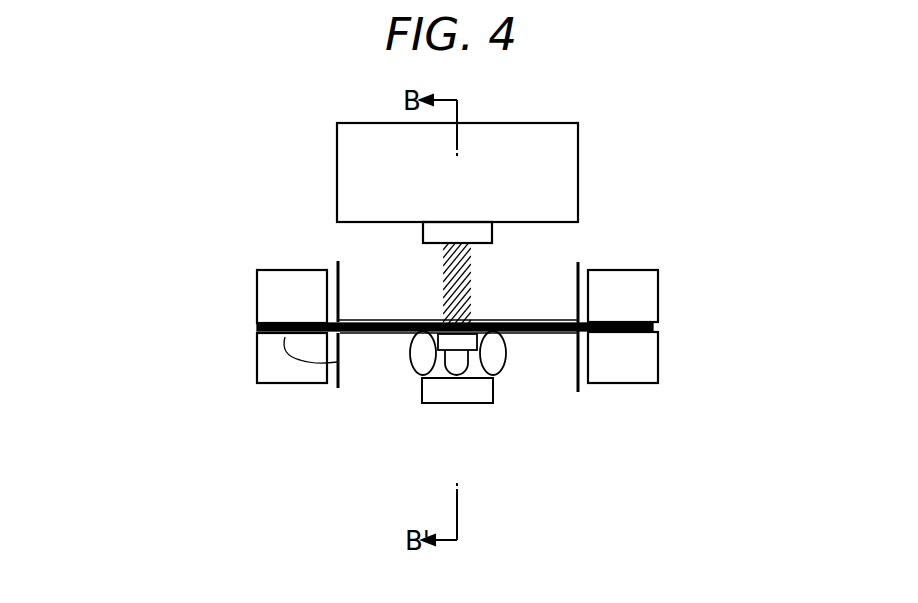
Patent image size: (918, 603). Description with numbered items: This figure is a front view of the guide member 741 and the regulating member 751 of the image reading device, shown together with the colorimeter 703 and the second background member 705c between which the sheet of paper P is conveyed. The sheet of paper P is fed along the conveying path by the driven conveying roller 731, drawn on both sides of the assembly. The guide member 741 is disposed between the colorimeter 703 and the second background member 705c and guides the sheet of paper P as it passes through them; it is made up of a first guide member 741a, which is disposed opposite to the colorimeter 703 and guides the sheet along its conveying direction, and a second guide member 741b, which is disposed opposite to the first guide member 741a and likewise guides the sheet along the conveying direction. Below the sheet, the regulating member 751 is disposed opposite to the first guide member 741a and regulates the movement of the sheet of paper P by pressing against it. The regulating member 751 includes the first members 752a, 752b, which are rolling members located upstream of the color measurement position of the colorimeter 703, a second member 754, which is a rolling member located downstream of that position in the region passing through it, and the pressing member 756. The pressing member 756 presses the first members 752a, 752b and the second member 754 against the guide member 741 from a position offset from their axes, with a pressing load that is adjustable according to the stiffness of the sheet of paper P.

The colorimeter 703 is at (562, 188).
The second background member 705c is at (436, 321).
The sheet of paper P is at (630, 321).
The conveying roller 731 is at (255, 336).
The guide member 741 is at (216, 273).
The first guide member 741a is at (336, 262).
The second guide member 741b is at (297, 322).
The regulating member 751 is at (426, 418).
The first member 752a is at (425, 350).
The first member 752b is at (494, 362).
The second member 754 is at (453, 358).
The pressing member 756 is at (453, 416).